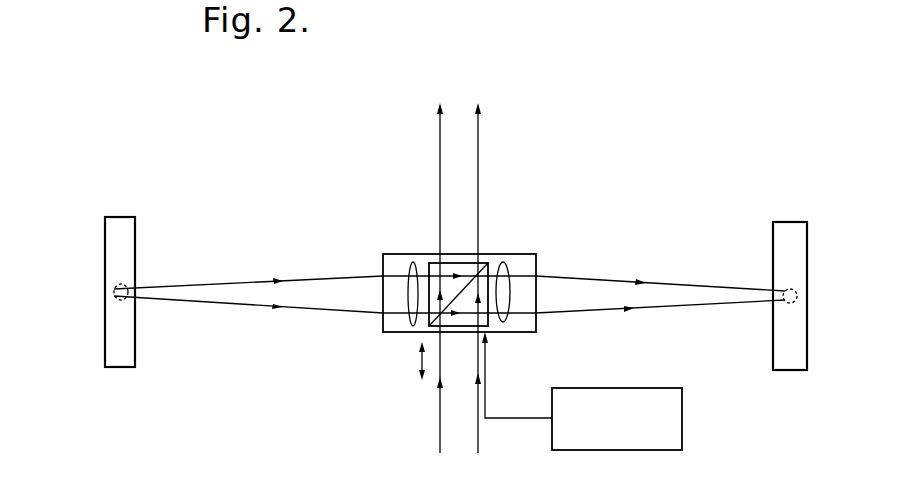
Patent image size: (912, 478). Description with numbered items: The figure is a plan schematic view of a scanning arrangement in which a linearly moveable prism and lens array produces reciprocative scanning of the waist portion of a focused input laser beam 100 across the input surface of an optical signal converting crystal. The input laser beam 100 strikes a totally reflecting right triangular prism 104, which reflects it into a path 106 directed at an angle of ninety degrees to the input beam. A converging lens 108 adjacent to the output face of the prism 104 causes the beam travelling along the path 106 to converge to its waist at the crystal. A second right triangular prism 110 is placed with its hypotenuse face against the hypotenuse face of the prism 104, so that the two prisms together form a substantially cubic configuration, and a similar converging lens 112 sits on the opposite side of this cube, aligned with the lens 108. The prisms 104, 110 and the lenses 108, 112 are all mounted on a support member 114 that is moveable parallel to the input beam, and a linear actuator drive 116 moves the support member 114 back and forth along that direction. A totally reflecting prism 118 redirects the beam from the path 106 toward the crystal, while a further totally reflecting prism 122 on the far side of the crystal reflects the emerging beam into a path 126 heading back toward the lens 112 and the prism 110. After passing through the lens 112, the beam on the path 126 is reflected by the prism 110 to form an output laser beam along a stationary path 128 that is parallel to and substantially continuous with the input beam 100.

The input laser beam 100 is at (456, 394).
The totally reflecting right triangular prism 104 is at (484, 340).
The path 106 is at (594, 293).
The converging lens 108 is at (507, 262).
The second right triangular prism 110 is at (482, 267).
The converging lens 112 is at (410, 260).
The support member 114 is at (383, 333).
The linear actuator drive 116 is at (682, 388).
The totally reflecting prism 118 is at (807, 236).
The totally reflecting prism 122 is at (103, 242).
The path 126 is at (226, 288).
The stationary path 128 is at (470, 173).